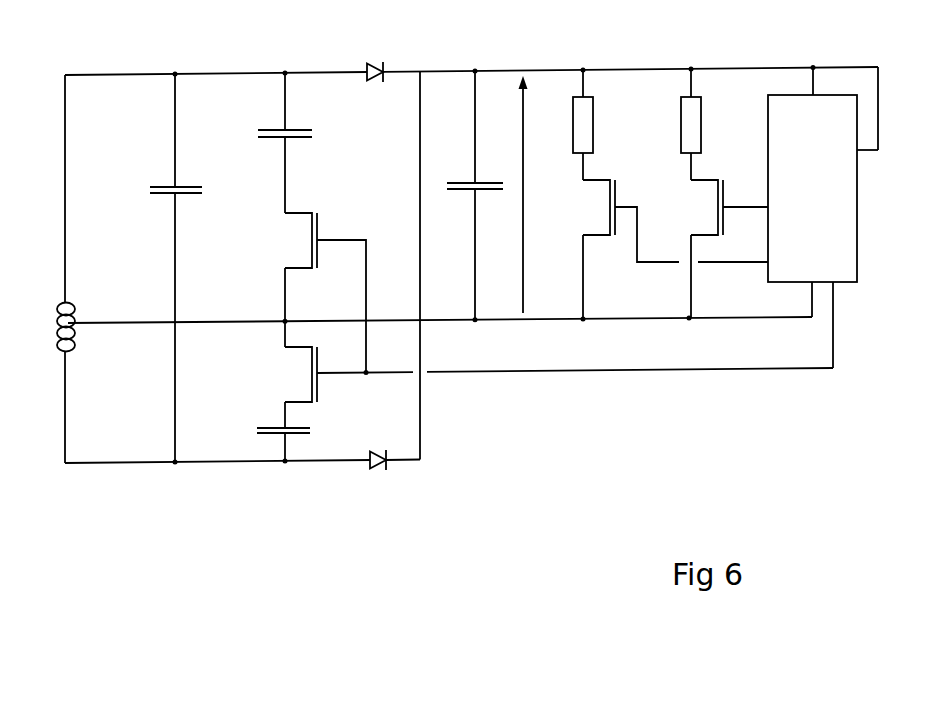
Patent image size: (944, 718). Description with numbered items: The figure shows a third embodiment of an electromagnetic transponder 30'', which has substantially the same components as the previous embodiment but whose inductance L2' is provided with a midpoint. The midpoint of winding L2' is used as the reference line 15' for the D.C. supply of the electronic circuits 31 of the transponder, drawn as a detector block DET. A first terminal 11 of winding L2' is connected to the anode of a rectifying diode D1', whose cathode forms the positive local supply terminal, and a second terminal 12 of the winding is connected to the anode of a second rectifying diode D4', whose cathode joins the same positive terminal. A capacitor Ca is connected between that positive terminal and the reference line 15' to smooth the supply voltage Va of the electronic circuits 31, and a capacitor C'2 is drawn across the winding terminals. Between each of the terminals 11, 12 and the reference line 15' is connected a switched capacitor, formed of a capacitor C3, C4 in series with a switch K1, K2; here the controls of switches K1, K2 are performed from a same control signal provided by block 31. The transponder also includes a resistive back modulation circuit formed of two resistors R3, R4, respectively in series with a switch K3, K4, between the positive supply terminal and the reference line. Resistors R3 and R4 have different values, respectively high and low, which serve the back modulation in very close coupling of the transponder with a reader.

The first terminal 11 is at (198, 72).
The second terminal 12 is at (113, 464).
The reference line 15' is at (440, 327).
The transponder 30'' is at (157, 331).
The electronic circuits 31 is at (841, 183).
The detector DET is at (812, 175).
The inductance L2' is at (46, 327).
The capacitor C'2 is at (184, 268).
The capacitor C3 is at (289, 143).
The capacitor C4 is at (304, 440).
The switch K1 is at (304, 241).
The switch K2 is at (302, 378).
The switch K3 is at (596, 201).
The switch K4 is at (704, 201).
The rectifying diode D1' is at (370, 52).
The second rectifying diode D4' is at (390, 290).
The capacitor Ca is at (474, 195).
The output voltage Va is at (538, 194).
The resistor R3 is at (601, 125).
The resistor R4 is at (709, 124).